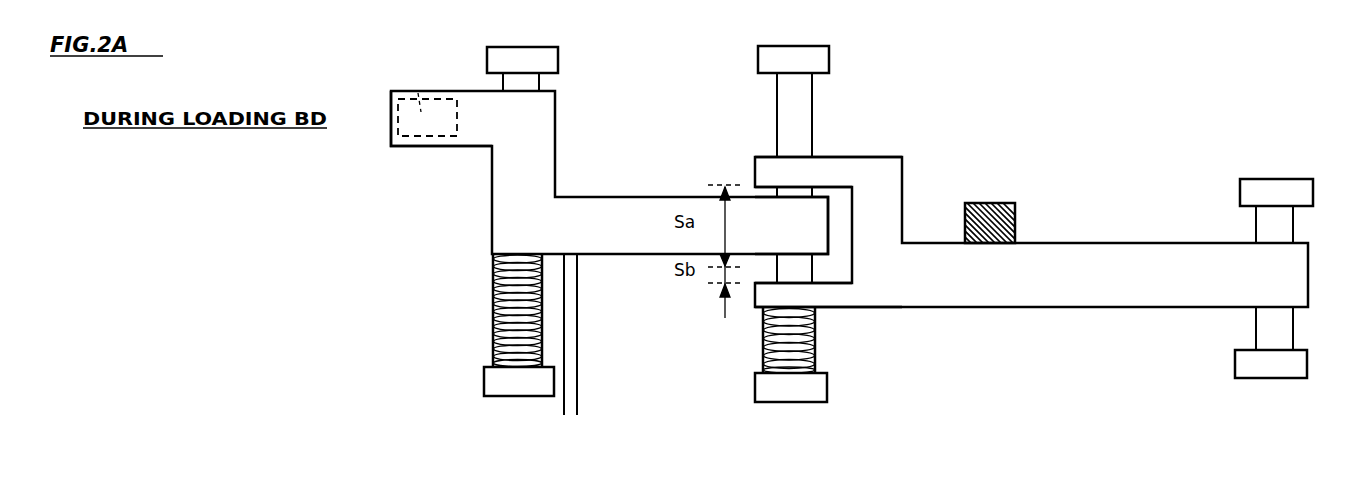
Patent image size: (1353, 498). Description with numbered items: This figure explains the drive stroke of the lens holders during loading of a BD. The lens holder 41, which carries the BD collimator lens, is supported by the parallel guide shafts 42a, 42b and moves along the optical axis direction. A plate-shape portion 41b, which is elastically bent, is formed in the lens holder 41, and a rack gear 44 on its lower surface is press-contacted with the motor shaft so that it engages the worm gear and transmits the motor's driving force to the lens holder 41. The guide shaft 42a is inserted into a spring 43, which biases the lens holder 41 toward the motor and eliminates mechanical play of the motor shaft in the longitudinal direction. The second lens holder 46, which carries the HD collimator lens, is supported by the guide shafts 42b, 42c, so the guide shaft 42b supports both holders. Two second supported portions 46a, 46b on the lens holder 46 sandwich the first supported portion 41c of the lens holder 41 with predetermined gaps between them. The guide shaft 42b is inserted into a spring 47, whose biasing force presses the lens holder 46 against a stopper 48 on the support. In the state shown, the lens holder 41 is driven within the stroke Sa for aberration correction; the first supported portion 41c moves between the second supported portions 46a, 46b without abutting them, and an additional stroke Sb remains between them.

The lens holder 41 is at (500, 202).
The plate-shape portion 41b is at (448, 147).
The first supported portion 41c is at (793, 230).
The guide shaft 42a is at (517, 75).
The guide shaft 42b is at (790, 128).
The guide shaft 42c is at (1262, 228).
The spring 43 is at (493, 335).
The rack gear 44 is at (417, 92).
The lens holder 46 is at (985, 300).
The second supported portion 46a is at (815, 175).
The second supported portion 46b is at (817, 290).
The spring 47 is at (810, 353).
The stopper 48 is at (995, 202).